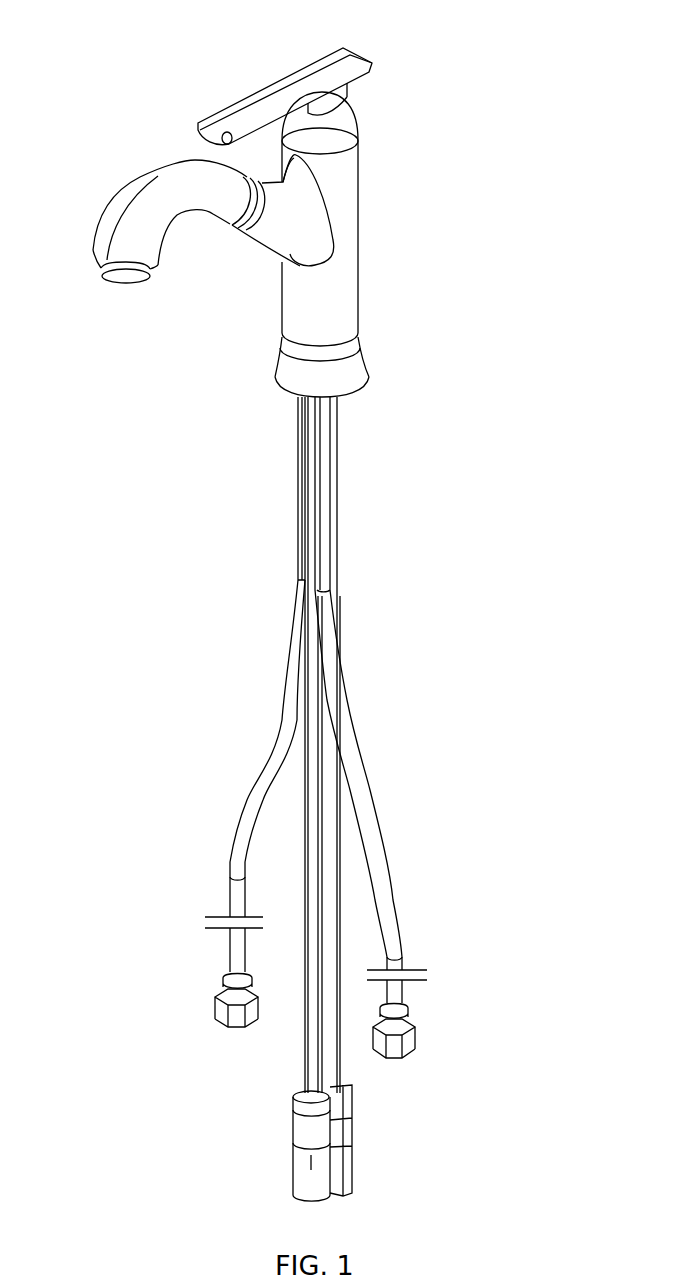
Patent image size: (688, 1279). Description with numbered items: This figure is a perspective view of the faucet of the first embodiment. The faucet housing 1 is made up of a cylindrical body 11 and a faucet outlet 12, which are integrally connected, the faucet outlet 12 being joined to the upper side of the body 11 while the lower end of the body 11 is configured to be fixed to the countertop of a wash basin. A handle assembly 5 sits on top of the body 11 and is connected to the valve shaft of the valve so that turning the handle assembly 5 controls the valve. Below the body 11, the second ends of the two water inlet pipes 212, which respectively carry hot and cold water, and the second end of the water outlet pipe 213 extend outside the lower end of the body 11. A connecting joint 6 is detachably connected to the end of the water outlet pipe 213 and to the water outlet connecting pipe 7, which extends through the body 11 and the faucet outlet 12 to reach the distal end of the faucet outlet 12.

The faucet housing 1 is at (256, 216).
The handle assembly 5 is at (322, 78).
The connecting joint 6 is at (322, 1173).
The water outlet connecting pipe 7 is at (312, 1045).
The body 11 is at (347, 220).
The faucet outlet 12 is at (162, 207).
The water inlet pipe 212 is at (258, 797).
The water outlet pipe 213 is at (328, 1072).